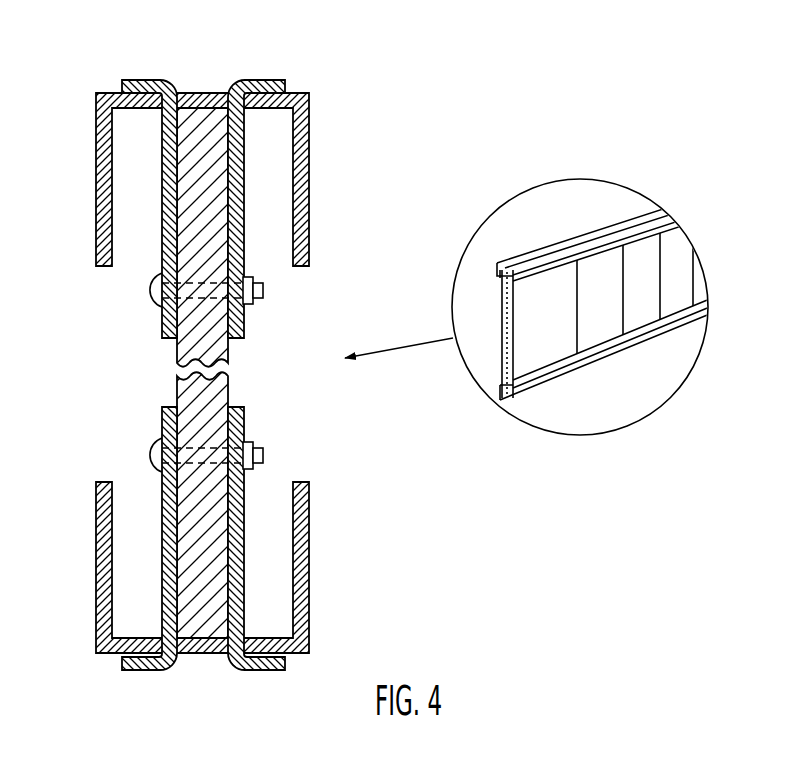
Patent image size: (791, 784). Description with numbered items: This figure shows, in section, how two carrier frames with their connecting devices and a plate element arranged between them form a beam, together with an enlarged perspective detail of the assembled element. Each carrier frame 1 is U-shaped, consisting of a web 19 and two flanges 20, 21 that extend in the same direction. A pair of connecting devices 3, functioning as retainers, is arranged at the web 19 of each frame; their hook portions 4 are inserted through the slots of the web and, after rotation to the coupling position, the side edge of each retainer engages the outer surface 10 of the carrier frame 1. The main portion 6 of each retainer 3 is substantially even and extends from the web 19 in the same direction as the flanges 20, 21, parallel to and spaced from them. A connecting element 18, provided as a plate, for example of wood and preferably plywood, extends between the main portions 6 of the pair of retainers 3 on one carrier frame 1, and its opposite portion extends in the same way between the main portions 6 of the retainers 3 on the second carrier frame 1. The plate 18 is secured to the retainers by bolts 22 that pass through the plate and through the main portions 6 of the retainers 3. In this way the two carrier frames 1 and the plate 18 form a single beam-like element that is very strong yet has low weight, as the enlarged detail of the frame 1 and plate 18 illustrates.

The carrier frame 1 is at (375, 377).
The connecting device 3 is at (182, 377).
The hook portion 4 is at (134, 72).
The main portion 6 is at (161, 538).
The outer surface 10 is at (296, 93).
The connecting element 18 is at (213, 354).
The web 19 is at (206, 93).
The flange 20 is at (96, 173).
The flange 21 is at (309, 224).
The bolt 22 is at (196, 283).